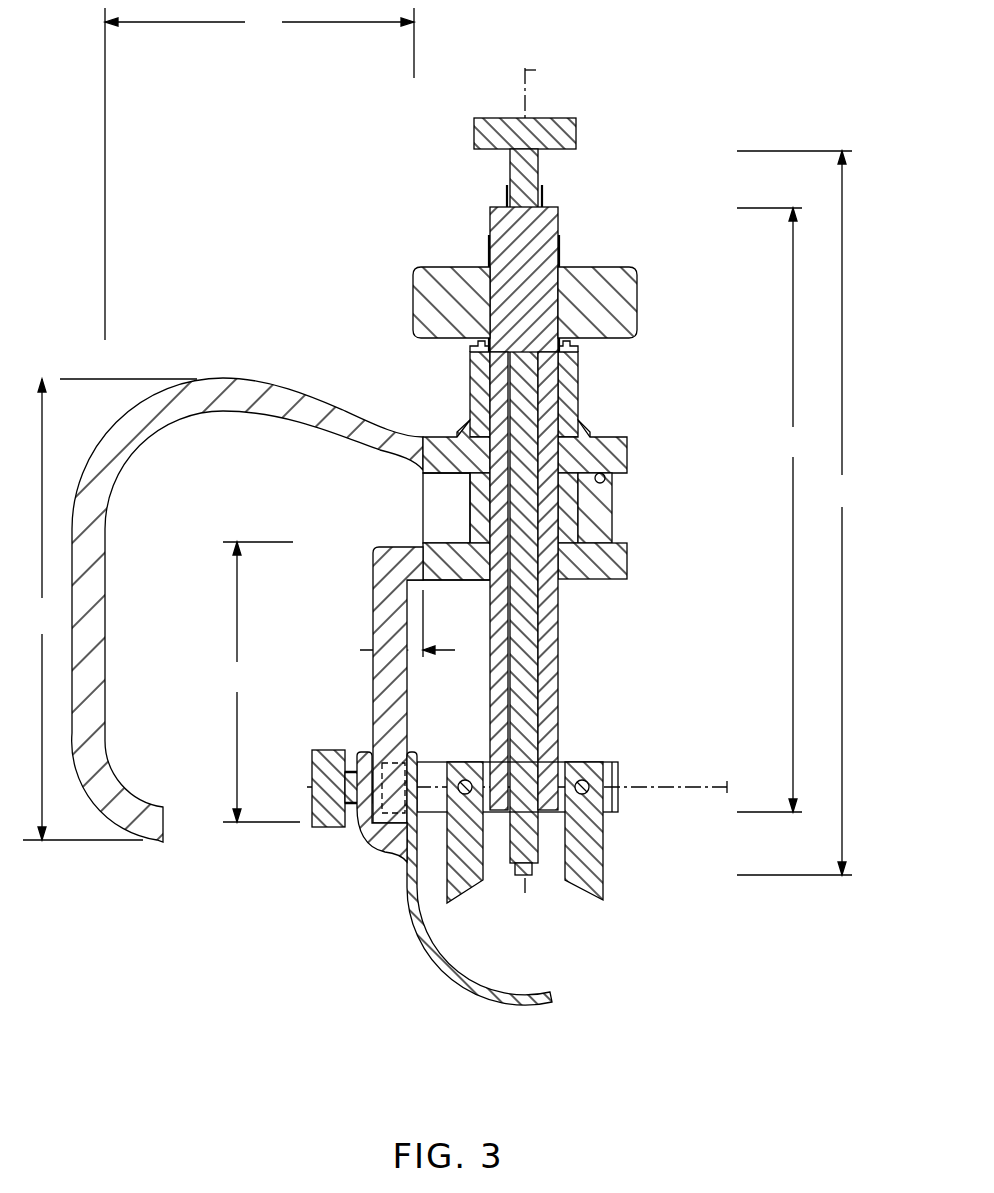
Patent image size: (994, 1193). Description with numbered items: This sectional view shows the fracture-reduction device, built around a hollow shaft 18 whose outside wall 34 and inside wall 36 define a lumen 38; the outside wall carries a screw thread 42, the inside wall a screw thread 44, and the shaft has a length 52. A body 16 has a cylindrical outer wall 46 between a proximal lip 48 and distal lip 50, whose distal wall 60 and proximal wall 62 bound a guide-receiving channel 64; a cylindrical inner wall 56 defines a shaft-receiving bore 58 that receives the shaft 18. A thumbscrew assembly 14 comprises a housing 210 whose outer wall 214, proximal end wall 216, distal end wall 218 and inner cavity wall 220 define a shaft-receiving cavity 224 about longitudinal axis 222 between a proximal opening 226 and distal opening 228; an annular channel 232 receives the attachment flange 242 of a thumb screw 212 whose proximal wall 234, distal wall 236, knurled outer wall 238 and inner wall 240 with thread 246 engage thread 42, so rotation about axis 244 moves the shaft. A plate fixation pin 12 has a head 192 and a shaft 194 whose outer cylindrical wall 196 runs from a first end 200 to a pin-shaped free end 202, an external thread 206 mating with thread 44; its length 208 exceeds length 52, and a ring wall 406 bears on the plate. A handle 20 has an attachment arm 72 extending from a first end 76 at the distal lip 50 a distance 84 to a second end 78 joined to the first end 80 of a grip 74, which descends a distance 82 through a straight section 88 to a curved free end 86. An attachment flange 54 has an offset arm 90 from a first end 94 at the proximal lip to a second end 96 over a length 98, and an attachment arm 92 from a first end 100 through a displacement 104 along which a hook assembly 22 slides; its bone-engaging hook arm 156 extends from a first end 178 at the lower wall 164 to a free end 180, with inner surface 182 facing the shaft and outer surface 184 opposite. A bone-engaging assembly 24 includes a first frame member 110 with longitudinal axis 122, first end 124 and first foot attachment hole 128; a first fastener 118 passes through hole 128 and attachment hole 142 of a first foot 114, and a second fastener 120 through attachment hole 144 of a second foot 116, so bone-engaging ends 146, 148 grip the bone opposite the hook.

The plate fixation pin 12 is at (577, 120).
The thumbscrew assembly 14 is at (690, 271).
The body 16 is at (627, 465).
The hollow shaft 18 is at (568, 211).
The handle 20 is at (222, 377).
The hook assembly 22 is at (412, 895).
The bone-engaging assembly 24 is at (628, 706).
The outside wall 34 is at (560, 632).
The inside wall 36 is at (540, 668).
The lumen 38 is at (568, 853).
The screw thread 42 is at (559, 252).
The screw thread 44 is at (490, 298).
The cylindrical outer wall 46 is at (590, 505).
The proximal lip 48 is at (627, 558).
The distal lip 50 is at (627, 452).
The length of the hollow shaft 52 is at (773, 510).
The attachment flange 54 is at (373, 718).
The cylindrical inner wall 56 is at (491, 586).
The shaft-receiving bore 58 is at (565, 588).
The distal wall of the proximal lip 60 is at (605, 532).
The proximal wall of the distal lip 62 is at (604, 480).
The guide-receiving channel 64 is at (430, 512).
The attachment arm 72 is at (340, 408).
The grip 74 is at (106, 650).
The first end of the attachment arm 76 is at (423, 438).
The second end of the attachment arm 78 is at (116, 432).
The first end of the grip 80 is at (142, 453).
The distance 82 is at (110, 609).
The distance 84 is at (259, 173).
The second end of the grip 86 is at (166, 823).
The straight section 88 is at (106, 570).
The offset arm 90 is at (413, 585).
The attachment arm 92 is at (407, 703).
The first end of the offset arm 94 is at (418, 535).
The second end of the offset arm 96 is at (408, 543).
The length 98 is at (389, 628).
The first end of the attachment arm 100 is at (395, 548).
The displacement 104 is at (256, 682).
The first frame member 110 is at (616, 766).
The first foot 114 is at (596, 880).
The second foot 116 is at (418, 932).
The first fastener 118 is at (604, 817).
The second fastener 120 is at (456, 892).
The longitudinal axis 122 is at (728, 785).
The first end 124 is at (618, 800).
The first foot attachment hole 128 is at (583, 758).
The attachment hole 142 is at (598, 762).
The attachment hole 144 is at (460, 764).
The bone-engaging end 146 is at (596, 901).
The bone-engaging end 148 is at (483, 886).
The bone-engaging hook arm 156 is at (530, 1006).
The lower wall 164 is at (372, 845).
The first end 178 is at (400, 856).
The free end 180 is at (555, 1002).
The inner surface 182 is at (552, 995).
The outer surface 184 is at (470, 1000).
The head 192 is at (473, 124).
The shaft 194 is at (541, 177).
The outer cylindrical wall 196 is at (510, 167).
The first end 200 is at (540, 155).
The free end 202 is at (539, 870).
The external thread 206 is at (507, 188).
The length 208 is at (801, 513).
The housing 210 is at (585, 412).
The thumb screw 212 is at (637, 283).
The outer wall 214 is at (578, 396).
The proximal end wall 216 is at (575, 445).
The distal end wall 218 is at (476, 343).
The inner cavity wall 220 is at (491, 400).
The longitudinal axis 222 is at (536, 68).
The shaft-receiving cavity 224 is at (492, 333).
The proximal opening 226 is at (470, 487).
The distal opening 228 is at (488, 281).
The annular channel 232 is at (576, 352).
The proximal wall 234 is at (573, 341).
The distal wall 236 is at (617, 268).
The outer wall 238 is at (413, 272).
The inner wall 240 is at (567, 297).
The attachment flange 242 is at (471, 351).
The longitudinal axis 244 is at (520, 216).
The thread 246 is at (562, 325).
The ring wall 406 is at (523, 877).